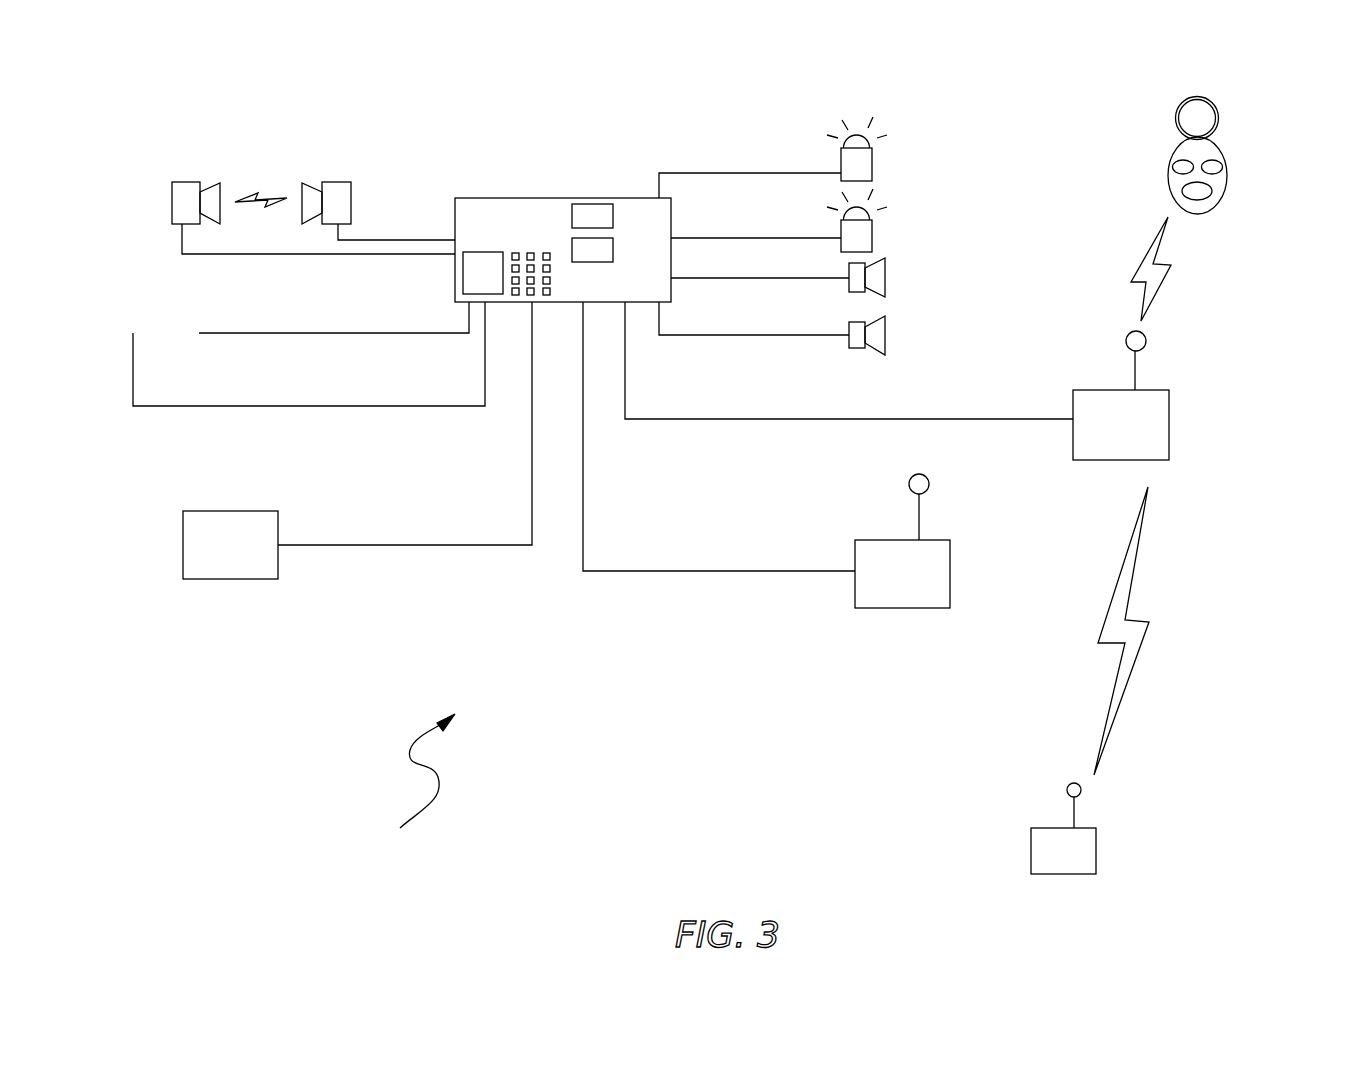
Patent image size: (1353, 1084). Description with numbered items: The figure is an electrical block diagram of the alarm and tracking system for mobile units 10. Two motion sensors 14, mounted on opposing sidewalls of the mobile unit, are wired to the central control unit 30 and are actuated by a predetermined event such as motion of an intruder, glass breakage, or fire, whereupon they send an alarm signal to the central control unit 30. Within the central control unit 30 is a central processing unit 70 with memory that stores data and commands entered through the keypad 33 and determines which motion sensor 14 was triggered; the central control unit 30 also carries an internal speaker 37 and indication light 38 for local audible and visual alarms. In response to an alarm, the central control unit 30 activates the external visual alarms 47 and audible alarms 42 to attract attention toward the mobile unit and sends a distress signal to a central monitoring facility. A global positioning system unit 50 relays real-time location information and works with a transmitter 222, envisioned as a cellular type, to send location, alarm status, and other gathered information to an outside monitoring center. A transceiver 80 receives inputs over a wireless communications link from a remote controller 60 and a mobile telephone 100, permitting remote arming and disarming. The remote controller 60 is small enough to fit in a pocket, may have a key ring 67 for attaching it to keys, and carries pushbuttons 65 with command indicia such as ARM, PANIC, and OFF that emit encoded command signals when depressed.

The alarm and tracking system for mobile units 10 is at (416, 783).
The motion sensor 14 is at (185, 195).
The central control unit 30 is at (640, 190).
The keypad 33 is at (528, 295).
The speaker 37 is at (595, 212).
The indication light 38 is at (582, 250).
The audible alarm 42 is at (877, 275).
The visual alarm 47 is at (863, 163).
The global positioning system unit 50 is at (265, 529).
The remote controller 60 is at (1228, 156).
The pushbutton 65 is at (1182, 167).
The key ring 67 is at (1197, 98).
The central processing unit 70 is at (488, 258).
The transceiver 80 is at (1165, 416).
The mobile telephone 100 is at (1089, 849).
The transmitter 222 is at (896, 577).